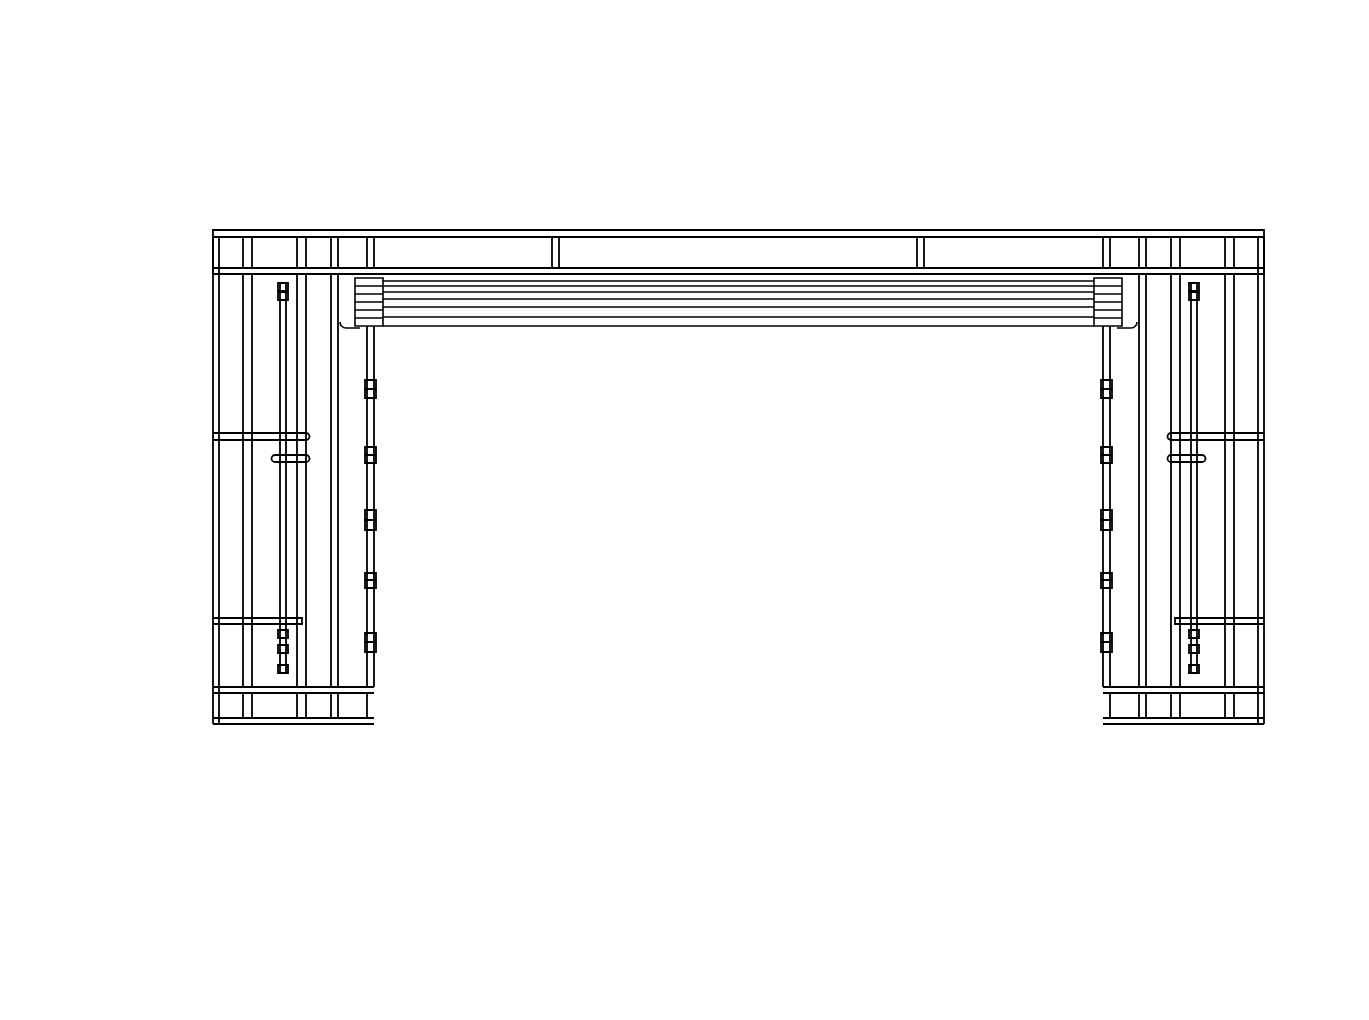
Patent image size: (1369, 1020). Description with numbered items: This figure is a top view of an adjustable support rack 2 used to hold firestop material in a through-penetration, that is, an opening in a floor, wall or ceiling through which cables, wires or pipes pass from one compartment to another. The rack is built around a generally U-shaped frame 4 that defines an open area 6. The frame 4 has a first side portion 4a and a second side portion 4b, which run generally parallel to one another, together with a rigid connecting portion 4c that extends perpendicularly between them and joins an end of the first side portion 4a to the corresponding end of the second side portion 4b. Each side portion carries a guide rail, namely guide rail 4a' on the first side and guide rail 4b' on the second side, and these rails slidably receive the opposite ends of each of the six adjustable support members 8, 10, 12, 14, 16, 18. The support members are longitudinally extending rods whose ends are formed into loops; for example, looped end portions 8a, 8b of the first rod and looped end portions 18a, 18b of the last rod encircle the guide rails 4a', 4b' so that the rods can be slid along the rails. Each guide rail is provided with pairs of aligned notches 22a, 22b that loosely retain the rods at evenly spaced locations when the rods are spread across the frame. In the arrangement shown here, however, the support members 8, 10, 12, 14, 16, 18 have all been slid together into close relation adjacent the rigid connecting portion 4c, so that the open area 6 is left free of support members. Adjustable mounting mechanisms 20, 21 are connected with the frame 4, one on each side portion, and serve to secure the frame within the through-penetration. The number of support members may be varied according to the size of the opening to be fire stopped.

The adjustable support rack 2 is at (228, 185).
The frame 4 is at (1085, 230).
The first side portion 4a is at (300, 480).
The second side portion 4b is at (1175, 480).
The guide rail 4a' is at (424, 506).
The guide rail 4b' is at (1053, 506).
The rigid connecting portion 4c is at (900, 230).
The open area 6 is at (707, 509).
The adjustable support member 8 is at (450, 280).
The looped end portion 8a is at (378, 285).
The looped end portion 8b is at (1112, 285).
The adjustable support member 10 is at (475, 291).
The adjustable support member 12 is at (512, 298).
The adjustable support member 14 is at (552, 306).
The adjustable support member 16 is at (623, 316).
The adjustable support member 18 is at (713, 325).
The looped end portion 18a is at (360, 318).
The looped end portion 18b is at (1120, 318).
The adjustable mounting mechanism 20 is at (285, 458).
The adjustable mounting mechanism 21 is at (1192, 462).
The aligned notches 22a is at (370, 390).
The aligned notches 22b is at (1107, 390).